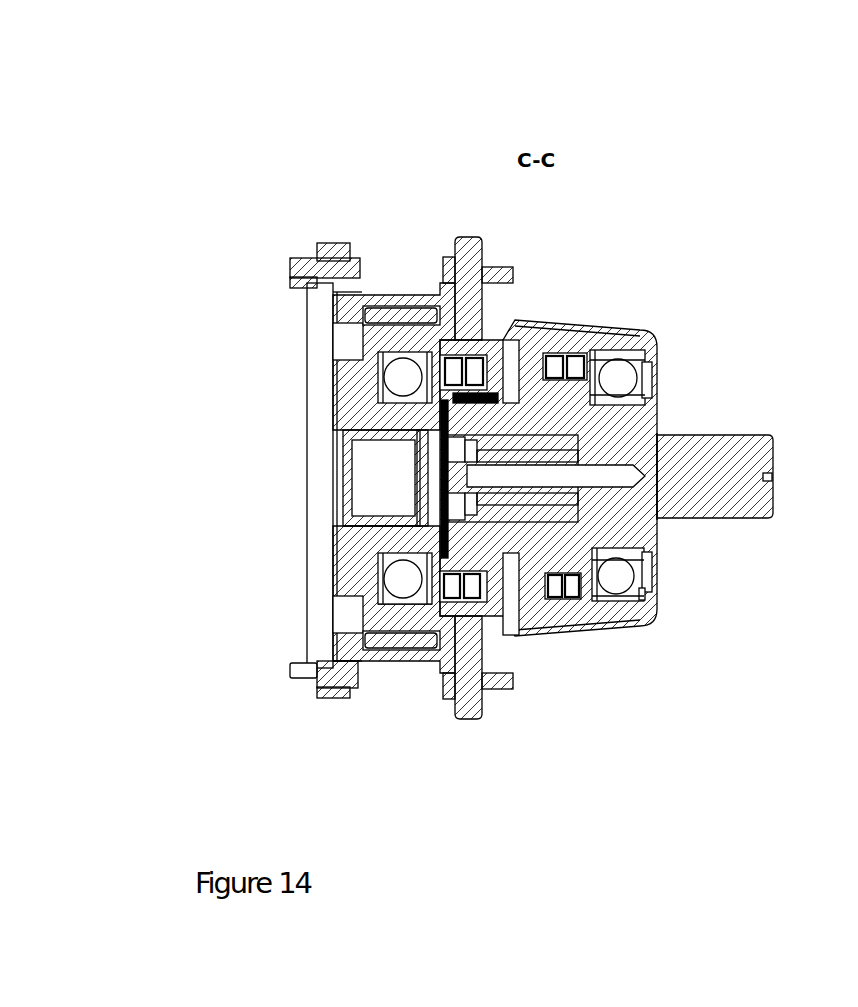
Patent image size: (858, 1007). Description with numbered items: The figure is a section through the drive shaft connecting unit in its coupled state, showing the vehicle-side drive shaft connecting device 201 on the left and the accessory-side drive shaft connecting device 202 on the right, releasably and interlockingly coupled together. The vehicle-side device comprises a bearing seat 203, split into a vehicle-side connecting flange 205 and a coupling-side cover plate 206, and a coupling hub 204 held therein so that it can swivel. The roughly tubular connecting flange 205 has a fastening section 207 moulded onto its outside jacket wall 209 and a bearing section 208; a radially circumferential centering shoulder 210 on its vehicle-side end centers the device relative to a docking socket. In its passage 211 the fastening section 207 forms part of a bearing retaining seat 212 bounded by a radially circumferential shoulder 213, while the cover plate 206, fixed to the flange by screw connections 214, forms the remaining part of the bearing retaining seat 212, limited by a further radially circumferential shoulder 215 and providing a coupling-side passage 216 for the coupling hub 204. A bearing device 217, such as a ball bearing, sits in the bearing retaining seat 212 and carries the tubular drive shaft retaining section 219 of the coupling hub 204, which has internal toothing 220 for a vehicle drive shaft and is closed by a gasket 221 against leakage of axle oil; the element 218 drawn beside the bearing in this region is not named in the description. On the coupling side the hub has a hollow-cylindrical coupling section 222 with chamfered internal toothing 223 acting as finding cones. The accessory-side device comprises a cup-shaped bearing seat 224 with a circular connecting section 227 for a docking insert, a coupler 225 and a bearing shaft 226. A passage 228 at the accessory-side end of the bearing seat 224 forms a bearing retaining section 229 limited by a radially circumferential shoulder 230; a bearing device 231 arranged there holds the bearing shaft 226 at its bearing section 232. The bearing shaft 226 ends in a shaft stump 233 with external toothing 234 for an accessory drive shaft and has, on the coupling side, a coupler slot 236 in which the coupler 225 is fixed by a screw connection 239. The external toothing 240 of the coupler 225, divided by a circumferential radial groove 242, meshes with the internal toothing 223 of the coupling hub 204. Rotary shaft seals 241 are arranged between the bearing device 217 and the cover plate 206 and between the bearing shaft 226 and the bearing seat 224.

The vehicle-side drive shaft connecting device 201 is at (320, 226).
The accessory-side drive shaft connecting device 202 is at (562, 308).
The bearing seat 203 is at (375, 295).
The coupling hub 204 is at (352, 527).
The connecting flange 205 is at (312, 678).
The cover plate 206 is at (430, 352).
The fastening section 207 is at (323, 257).
The bearing section 208 is at (395, 308).
The outside jacket wall 209 is at (383, 661).
The centering shoulder 210 is at (316, 249).
The passage 211 is at (292, 457).
The bearing retaining seat 212 is at (395, 648).
The radially circumferential shoulder 213 is at (385, 597).
The screw connections 214 is at (425, 657).
The radially circumferential shoulder 215 is at (441, 308).
The coupling-side passage 216 is at (497, 575).
The bearing device 217 is at (383, 360).
The sleeve 218 is at (500, 400).
The drive shaft retaining section 219 is at (343, 428).
The internal toothing 220 is at (377, 437).
The gasket 221 is at (417, 437).
The coupling section 222 is at (450, 375).
The internal toothing 223 is at (475, 393).
The bearing seat 224 is at (630, 340).
The coupler 225 is at (570, 590).
The bearing shaft 226 is at (660, 450).
The connecting section 227 is at (502, 640).
The passage 228 is at (657, 378).
The bearing retaining section 229 is at (625, 603).
The radially circumferential shoulder 230 is at (640, 597).
The bearing device 231 is at (600, 598).
The bearing section 232 is at (598, 393).
The shaft stump 233 is at (772, 472).
The external toothing 234 is at (545, 390).
The coupler slot 236 is at (592, 350).
The screw connection 239 is at (542, 548).
The external toothing 240 is at (453, 398).
The rotary shaft seals 241 is at (463, 600).
The circumferential radial groove 242 is at (507, 482).